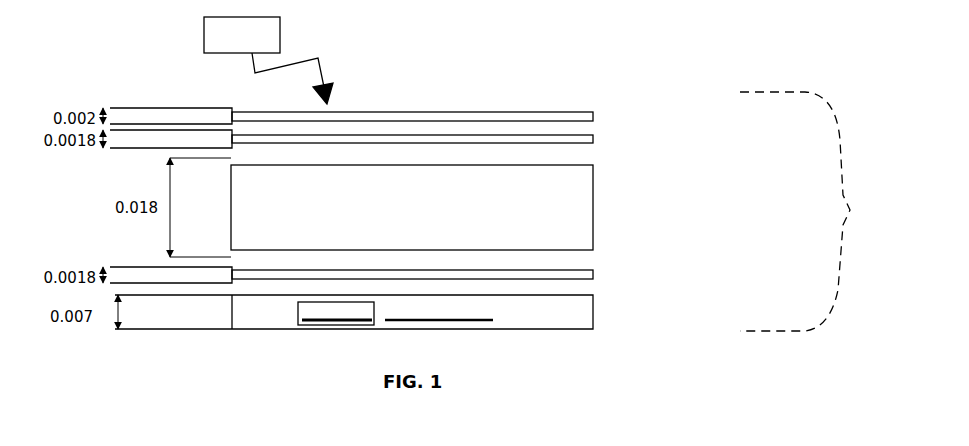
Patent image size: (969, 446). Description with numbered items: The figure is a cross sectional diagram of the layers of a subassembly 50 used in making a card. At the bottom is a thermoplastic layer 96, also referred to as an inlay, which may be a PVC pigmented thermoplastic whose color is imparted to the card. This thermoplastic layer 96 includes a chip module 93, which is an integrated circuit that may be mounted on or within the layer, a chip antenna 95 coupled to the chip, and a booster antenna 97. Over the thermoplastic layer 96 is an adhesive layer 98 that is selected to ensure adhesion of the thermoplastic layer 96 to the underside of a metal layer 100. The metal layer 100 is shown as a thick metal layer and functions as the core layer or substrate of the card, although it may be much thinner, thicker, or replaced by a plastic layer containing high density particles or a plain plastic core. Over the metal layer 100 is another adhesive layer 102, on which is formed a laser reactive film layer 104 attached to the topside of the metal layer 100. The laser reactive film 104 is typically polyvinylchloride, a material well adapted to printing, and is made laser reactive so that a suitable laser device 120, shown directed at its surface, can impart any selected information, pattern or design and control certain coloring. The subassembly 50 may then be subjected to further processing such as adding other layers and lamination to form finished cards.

The laser device 120 is at (203, 33).
The laser reactive film layer 104 is at (593, 117).
The adhesive layer 102 is at (593, 139).
The metal layer 100 is at (593, 227).
The adhesive layer 98 is at (593, 274).
The thermoplastic layer 96 is at (593, 305).
The chip module 93 is at (300, 315).
The chip antenna 95 is at (337, 330).
The booster antenna 97 is at (476, 328).
The subassembly 50 is at (808, 211).